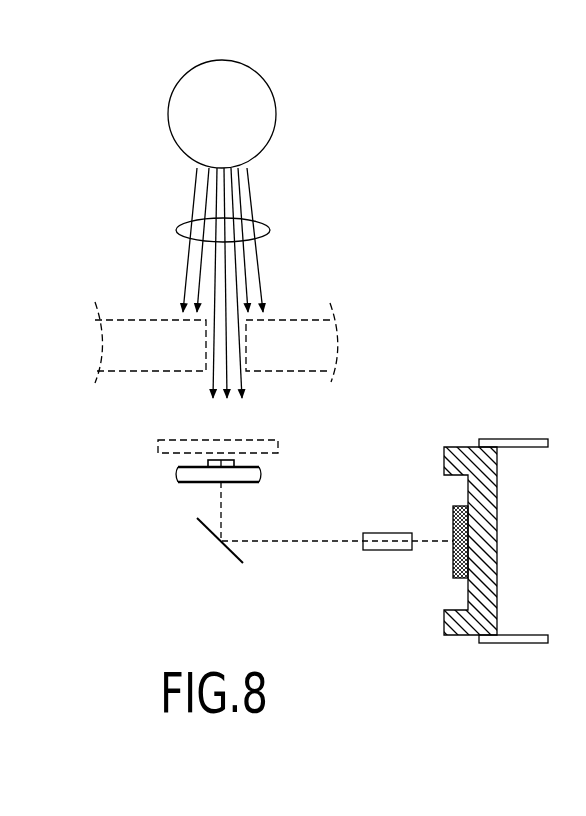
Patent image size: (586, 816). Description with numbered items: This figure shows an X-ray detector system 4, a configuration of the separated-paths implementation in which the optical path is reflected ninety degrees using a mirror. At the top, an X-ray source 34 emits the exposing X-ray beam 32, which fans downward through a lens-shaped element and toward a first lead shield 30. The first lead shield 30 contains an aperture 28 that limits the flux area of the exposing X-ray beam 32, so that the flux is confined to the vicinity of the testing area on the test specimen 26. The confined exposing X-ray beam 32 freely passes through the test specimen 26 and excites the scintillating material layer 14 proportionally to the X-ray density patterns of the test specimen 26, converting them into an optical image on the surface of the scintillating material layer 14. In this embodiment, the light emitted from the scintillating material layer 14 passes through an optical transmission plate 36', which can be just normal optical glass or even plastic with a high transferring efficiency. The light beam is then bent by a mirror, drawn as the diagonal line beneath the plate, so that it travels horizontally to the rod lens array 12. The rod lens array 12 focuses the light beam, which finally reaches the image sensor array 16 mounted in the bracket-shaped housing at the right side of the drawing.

The X-ray detector system 4 is at (101, 81).
The light source 34 is at (267, 82).
The exposing X-ray beam 32 is at (270, 230).
The aperture 28 is at (243, 370).
The first lead shield 30 is at (137, 320).
The test specimen 26 is at (190, 440).
The scintillating material layer 14 is at (205, 462).
The optical transmission plate 36' is at (189, 499).
The rod lens array 12 is at (390, 555).
The image sensor array 16 is at (452, 522).